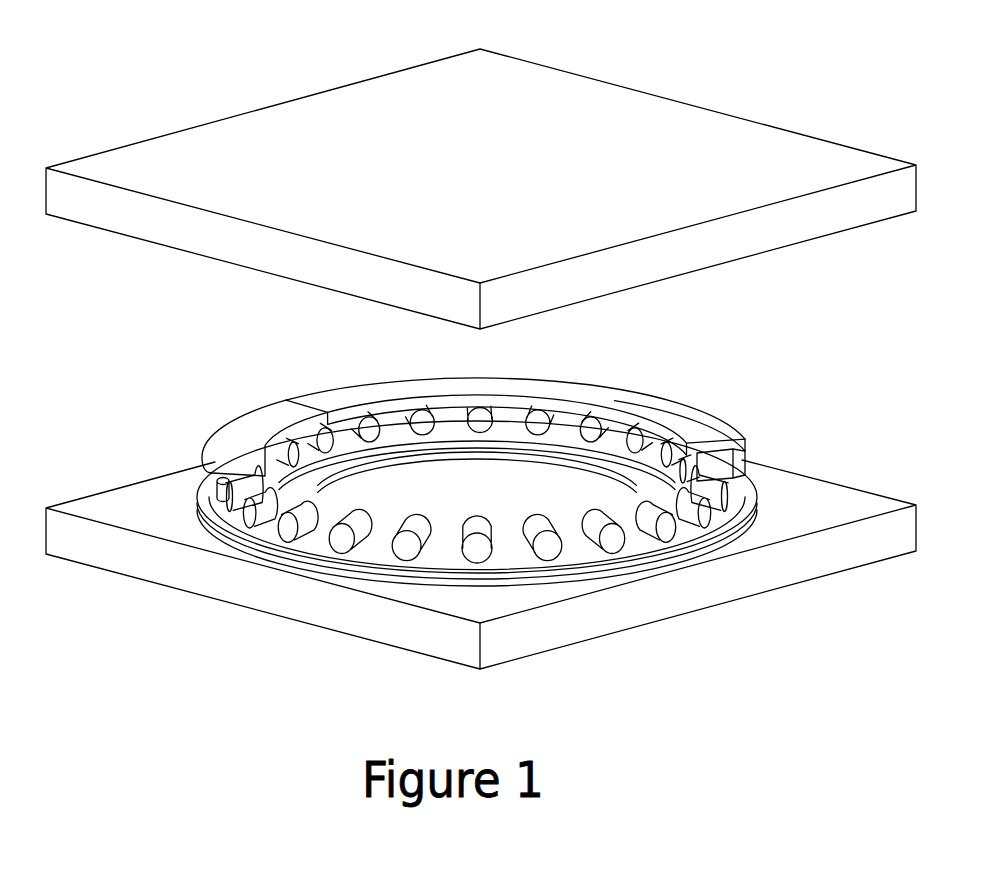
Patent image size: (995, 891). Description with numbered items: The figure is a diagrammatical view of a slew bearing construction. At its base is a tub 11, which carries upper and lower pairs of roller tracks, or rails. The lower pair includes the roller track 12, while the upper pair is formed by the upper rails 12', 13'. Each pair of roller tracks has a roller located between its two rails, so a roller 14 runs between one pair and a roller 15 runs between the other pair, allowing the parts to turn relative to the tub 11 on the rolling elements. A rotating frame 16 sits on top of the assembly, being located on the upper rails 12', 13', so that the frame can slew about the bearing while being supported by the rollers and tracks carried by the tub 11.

The tub 11 is at (583, 617).
The roller track 12 is at (559, 470).
The upper rail 12' is at (194, 398).
The upper rail 13' is at (560, 394).
The roller 14 is at (235, 495).
The roller 15 is at (685, 515).
The rotating frame 16 is at (243, 157).